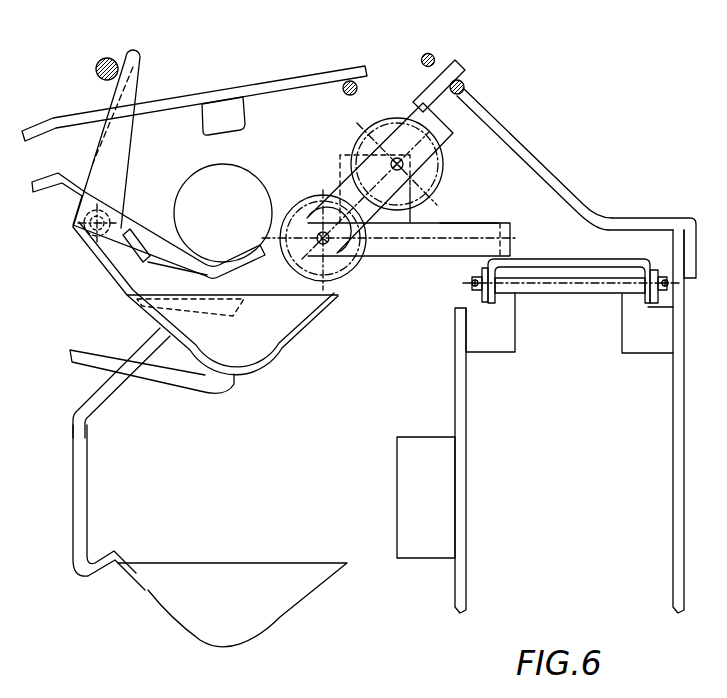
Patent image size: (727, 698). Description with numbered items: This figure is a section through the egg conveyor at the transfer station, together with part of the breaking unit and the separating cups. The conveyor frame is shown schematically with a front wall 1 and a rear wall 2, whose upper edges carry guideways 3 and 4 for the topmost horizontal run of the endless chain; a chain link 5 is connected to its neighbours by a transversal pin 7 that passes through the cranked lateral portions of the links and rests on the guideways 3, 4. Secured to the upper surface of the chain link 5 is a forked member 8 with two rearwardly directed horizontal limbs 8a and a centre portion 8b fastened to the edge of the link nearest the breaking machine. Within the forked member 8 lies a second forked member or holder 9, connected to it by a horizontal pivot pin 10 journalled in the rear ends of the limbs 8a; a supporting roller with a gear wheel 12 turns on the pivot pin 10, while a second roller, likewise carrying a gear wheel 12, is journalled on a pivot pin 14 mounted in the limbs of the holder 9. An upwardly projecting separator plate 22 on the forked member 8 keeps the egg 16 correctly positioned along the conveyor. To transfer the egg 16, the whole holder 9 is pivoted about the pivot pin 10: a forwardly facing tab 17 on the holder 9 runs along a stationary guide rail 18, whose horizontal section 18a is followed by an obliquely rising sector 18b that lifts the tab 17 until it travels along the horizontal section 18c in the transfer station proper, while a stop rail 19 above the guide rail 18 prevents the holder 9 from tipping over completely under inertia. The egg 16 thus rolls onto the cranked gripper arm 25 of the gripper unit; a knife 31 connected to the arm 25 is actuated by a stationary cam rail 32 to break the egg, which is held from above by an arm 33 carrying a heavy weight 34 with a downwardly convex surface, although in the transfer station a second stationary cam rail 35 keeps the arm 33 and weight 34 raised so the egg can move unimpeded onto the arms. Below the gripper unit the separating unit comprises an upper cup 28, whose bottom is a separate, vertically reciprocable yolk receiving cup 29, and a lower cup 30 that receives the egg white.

The front wall 1 is at (680, 440).
The rear wall 2 is at (460, 532).
The guideway 3 is at (643, 345).
The guideway 4 is at (495, 343).
The chain link 5 is at (580, 256).
The transversal pin 7 is at (562, 294).
The forked member 8 is at (430, 248).
The limb 8a is at (477, 225).
The centre portion 8b is at (511, 232).
The holder 9 is at (447, 145).
The pivot pin 10 is at (326, 244).
The gear wheel 12 is at (355, 270).
The pivot pin 14 is at (397, 158).
The egg 16 is at (250, 180).
The tab 17 is at (462, 66).
The guide rail 18 is at (573, 179).
The horizontal section 18a is at (635, 222).
The sector 18b is at (510, 144).
The horizontal section 18c is at (465, 89).
The stop rail 19 is at (433, 54).
The separator plate 22 is at (343, 165).
The gripper arm 25 is at (143, 222).
The upper cup 28 is at (303, 332).
The yolk receiving cup 29 is at (247, 388).
The lower cup 30 is at (327, 578).
The knife 31 is at (212, 287).
The cam rail 32 is at (105, 58).
The arm 33 is at (315, 75).
The weight 34 is at (245, 116).
The cam rail 35 is at (358, 88).